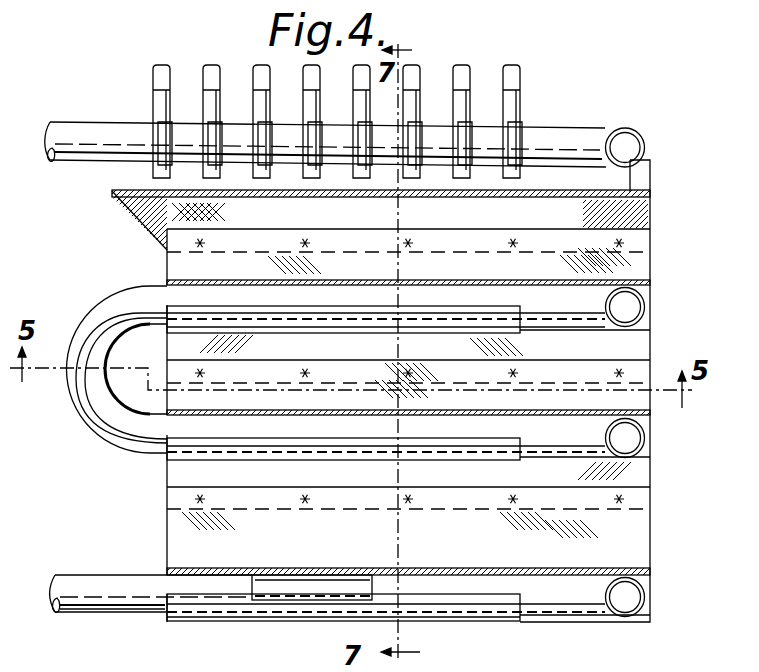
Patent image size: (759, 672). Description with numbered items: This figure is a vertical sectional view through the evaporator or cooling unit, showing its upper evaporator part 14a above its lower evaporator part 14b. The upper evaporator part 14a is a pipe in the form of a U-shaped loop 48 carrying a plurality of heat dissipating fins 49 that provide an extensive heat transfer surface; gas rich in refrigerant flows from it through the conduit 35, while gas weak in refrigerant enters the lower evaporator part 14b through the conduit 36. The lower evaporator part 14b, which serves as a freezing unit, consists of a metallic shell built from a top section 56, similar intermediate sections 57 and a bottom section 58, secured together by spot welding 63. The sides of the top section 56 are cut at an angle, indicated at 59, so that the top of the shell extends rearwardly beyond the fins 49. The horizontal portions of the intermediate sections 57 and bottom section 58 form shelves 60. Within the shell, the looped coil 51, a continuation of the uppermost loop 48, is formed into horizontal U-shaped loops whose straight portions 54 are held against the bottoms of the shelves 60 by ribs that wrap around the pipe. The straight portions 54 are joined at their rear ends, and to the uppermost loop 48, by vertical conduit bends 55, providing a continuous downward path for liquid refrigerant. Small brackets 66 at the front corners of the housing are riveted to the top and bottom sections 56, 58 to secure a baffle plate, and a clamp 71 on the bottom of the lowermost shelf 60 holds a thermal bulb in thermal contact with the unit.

The upper evaporator part 14a is at (535, 122).
The lower evaporator part 14b is at (653, 279).
The conduit 35 is at (55, 122).
The conduit 36 is at (72, 610).
The U-shaped loop 48 is at (184, 126).
The fins 49 is at (470, 76).
The looped coil 51 is at (641, 299).
The straight portions 54 is at (193, 294).
The vertical conduit bends 55 is at (80, 394).
The top section 56 is at (652, 211).
The intermediate sections 57 is at (652, 348).
The bottom section 58 is at (652, 552).
The angled cut 59 is at (131, 208).
The shelves 60 is at (470, 272).
The spot welding 63 is at (511, 241).
The brackets 66 is at (652, 175).
The clamp 71 is at (300, 590).